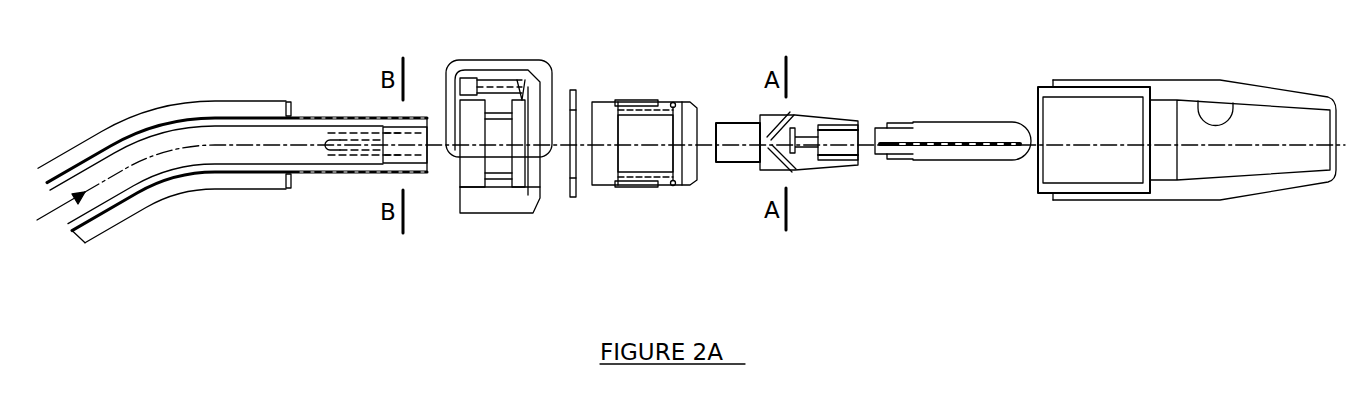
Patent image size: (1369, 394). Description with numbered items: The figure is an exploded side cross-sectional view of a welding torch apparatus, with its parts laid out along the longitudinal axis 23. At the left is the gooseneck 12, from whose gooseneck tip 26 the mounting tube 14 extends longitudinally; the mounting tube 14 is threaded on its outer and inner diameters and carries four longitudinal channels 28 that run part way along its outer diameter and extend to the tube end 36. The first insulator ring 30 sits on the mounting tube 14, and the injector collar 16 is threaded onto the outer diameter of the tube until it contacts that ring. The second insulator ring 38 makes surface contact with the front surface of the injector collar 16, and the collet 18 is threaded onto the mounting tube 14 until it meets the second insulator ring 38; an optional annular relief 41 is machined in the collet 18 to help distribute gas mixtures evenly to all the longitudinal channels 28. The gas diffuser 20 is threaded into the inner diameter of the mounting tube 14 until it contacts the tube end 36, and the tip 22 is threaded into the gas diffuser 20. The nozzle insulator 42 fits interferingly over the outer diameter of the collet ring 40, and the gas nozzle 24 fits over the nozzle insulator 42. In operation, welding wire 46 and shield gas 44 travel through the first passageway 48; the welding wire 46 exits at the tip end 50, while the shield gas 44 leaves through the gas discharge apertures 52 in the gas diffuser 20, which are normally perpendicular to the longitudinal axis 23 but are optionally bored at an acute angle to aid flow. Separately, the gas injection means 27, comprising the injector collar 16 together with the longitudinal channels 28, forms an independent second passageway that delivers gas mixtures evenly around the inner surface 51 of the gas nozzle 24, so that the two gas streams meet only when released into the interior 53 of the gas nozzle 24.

The gooseneck 12 is at (152, 200).
The mounting tube 14 is at (344, 173).
The injector collar 16 is at (497, 198).
The collet 18 is at (663, 185).
The gas diffuser 20 is at (807, 165).
The tip 22 is at (948, 155).
The longitudinal axis 23 is at (1345, 140).
The gas nozzle 24 is at (1178, 197).
The gooseneck tip 26 is at (221, 183).
The gas injection means 27 is at (451, 275).
The longitudinal channels 28 is at (330, 140).
The first insulator ring 30 is at (288, 102).
The tube end 36 is at (427, 164).
The second insulator ring 38 is at (573, 197).
The collet ring 40 is at (637, 100).
The annular relief 41 is at (604, 115).
The nozzle insulator 42 is at (1045, 90).
The shield gas 44 is at (78, 247).
The welding wire 46 is at (60, 203).
The first passageway 48 is at (203, 142).
The tip end 50 is at (1010, 157).
The inner surface 51 is at (1238, 176).
The gas discharge apertures 52 is at (770, 170).
The interior 53 is at (1293, 120).